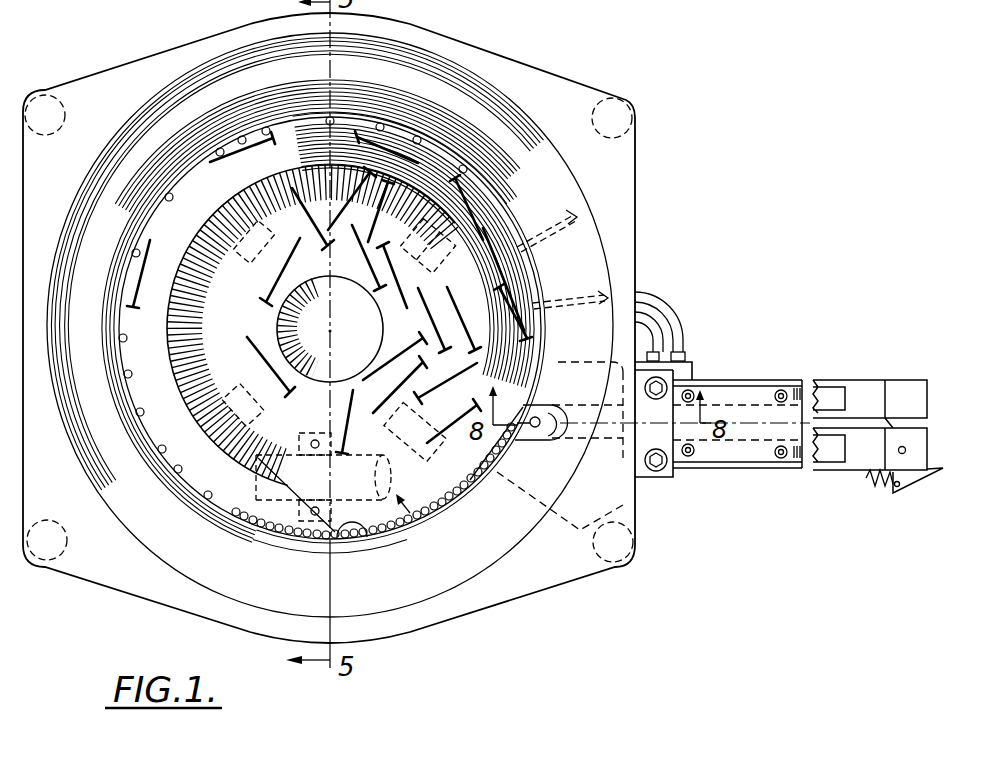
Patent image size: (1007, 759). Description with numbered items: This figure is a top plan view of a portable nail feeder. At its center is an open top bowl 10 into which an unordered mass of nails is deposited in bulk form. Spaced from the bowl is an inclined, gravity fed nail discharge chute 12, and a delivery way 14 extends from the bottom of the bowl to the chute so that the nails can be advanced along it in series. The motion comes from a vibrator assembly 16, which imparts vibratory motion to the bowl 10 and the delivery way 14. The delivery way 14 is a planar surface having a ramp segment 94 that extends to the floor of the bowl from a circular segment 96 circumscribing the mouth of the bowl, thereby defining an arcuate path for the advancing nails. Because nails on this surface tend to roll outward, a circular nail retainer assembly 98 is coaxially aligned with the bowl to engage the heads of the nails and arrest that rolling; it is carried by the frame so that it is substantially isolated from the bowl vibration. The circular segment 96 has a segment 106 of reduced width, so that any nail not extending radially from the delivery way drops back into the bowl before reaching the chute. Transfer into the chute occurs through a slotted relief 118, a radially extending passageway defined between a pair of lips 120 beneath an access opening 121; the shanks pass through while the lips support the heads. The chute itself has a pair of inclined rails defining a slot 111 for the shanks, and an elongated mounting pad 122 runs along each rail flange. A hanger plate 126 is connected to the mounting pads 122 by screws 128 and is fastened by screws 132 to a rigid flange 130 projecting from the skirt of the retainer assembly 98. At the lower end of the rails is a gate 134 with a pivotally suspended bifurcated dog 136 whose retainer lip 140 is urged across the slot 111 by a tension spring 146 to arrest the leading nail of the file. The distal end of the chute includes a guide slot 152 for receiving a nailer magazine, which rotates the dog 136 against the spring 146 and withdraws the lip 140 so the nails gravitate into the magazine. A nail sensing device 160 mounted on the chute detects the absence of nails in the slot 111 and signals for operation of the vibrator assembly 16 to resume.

The open top bowl 10 is at (533, 60).
The nail discharge chute 12 is at (863, 372).
The delivery way 14 is at (435, 170).
The vibrator assembly 16 is at (416, 530).
The ramp segment 94 is at (487, 205).
The circular segment 96 is at (186, 178).
The nail retainer assembly 98 is at (417, 590).
The segment of reduced width 106 is at (358, 537).
The slot 111 is at (858, 428).
The slotted relief 118 is at (508, 433).
The lips 120 is at (552, 445).
The access opening 121 is at (527, 445).
The mounting pad 122 is at (790, 400).
The hanger plate 126 is at (758, 395).
The screws 128 is at (693, 456).
The rigid flange 130 is at (643, 458).
The screws 132 is at (662, 462).
The gate 134 is at (893, 504).
The bifurcated dog 136 is at (922, 478).
The retainer lip 140 is at (886, 428).
The tension spring 146 is at (872, 490).
The guide slot 152 is at (925, 423).
The nail sensing device 160 is at (698, 352).